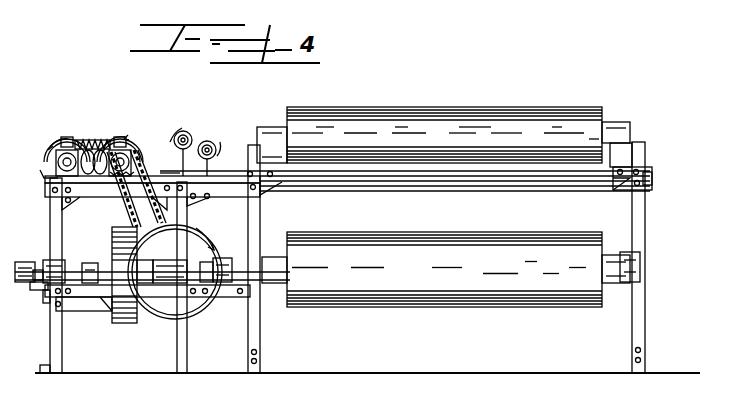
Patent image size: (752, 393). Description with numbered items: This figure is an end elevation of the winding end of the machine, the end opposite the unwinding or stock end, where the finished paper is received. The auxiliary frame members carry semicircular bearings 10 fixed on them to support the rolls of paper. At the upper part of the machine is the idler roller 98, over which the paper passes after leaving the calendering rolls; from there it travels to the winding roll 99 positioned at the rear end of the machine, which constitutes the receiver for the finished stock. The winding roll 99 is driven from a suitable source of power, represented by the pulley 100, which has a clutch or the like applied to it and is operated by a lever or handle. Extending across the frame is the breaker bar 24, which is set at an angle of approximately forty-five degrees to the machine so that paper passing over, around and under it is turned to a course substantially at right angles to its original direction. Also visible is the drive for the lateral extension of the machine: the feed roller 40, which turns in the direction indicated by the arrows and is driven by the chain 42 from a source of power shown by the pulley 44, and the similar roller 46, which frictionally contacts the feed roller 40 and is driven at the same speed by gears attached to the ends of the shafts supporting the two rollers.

The semicircular bearings 10 is at (626, 258).
The first breaker bar 24 is at (484, 184).
The feed roller 40 is at (133, 145).
The chain 42 is at (118, 210).
The pulley 44 is at (187, 302).
The roller 46 is at (44, 150).
The idler roller 98 is at (545, 122).
The winding roll 99 is at (470, 307).
The pulley 100 is at (135, 321).